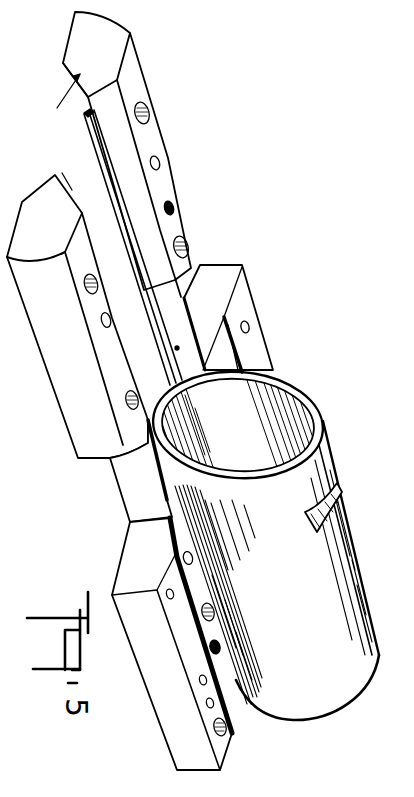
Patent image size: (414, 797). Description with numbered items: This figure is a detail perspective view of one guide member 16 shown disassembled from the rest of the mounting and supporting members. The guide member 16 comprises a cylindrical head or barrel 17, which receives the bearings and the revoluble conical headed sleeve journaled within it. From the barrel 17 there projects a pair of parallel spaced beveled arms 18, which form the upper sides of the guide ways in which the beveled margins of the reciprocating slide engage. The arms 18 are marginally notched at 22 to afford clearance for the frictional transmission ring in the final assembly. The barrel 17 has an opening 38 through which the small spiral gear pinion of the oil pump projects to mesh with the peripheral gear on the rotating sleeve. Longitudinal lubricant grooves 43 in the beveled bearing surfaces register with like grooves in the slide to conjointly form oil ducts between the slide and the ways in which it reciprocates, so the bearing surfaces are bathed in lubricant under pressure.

The guide member 16 is at (171, 190).
The cylindrical head or barrel 17 is at (358, 566).
The beveled arms 18 is at (63, 174).
The notch 22 is at (187, 288).
The opening 38 is at (338, 483).
The longitudinal lubricant grooves 43 is at (100, 156).